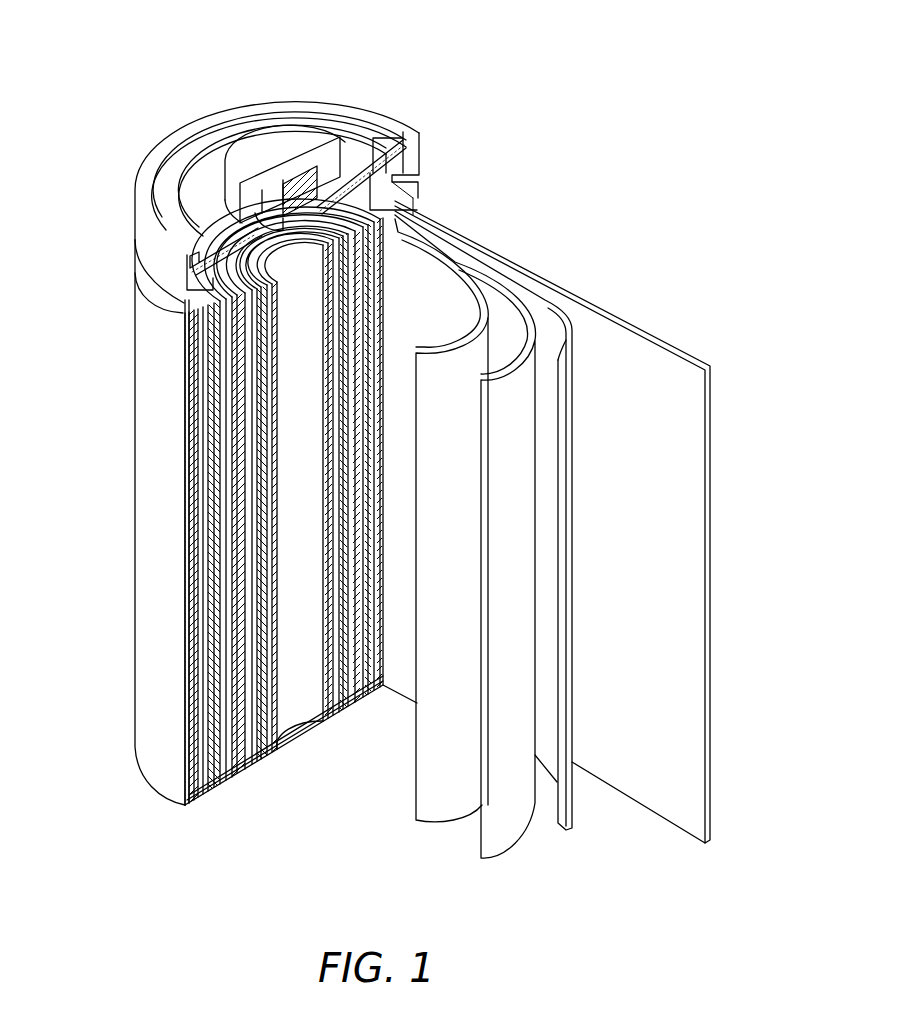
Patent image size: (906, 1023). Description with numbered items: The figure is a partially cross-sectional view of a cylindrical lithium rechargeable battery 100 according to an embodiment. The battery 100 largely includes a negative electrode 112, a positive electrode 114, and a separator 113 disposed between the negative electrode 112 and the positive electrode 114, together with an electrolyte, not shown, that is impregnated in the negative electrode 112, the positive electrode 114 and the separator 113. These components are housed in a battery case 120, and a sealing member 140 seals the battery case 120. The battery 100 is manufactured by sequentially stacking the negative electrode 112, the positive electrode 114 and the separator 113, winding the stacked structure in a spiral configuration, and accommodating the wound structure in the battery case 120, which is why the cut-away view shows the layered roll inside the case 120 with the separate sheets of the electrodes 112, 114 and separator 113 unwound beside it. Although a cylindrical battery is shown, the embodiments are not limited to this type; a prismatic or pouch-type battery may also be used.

The lithium rechargeable battery 100 is at (556, 88).
The negative electrode 112 is at (693, 613).
The separator 113 is at (470, 260).
The positive electrode 114 is at (502, 292).
The battery case 120 is at (150, 523).
The sealing member 140 is at (283, 138).